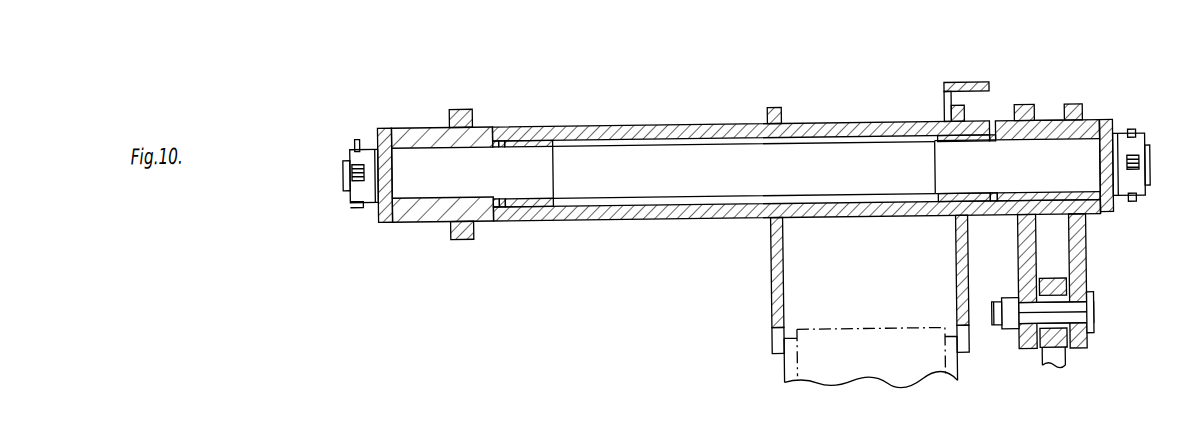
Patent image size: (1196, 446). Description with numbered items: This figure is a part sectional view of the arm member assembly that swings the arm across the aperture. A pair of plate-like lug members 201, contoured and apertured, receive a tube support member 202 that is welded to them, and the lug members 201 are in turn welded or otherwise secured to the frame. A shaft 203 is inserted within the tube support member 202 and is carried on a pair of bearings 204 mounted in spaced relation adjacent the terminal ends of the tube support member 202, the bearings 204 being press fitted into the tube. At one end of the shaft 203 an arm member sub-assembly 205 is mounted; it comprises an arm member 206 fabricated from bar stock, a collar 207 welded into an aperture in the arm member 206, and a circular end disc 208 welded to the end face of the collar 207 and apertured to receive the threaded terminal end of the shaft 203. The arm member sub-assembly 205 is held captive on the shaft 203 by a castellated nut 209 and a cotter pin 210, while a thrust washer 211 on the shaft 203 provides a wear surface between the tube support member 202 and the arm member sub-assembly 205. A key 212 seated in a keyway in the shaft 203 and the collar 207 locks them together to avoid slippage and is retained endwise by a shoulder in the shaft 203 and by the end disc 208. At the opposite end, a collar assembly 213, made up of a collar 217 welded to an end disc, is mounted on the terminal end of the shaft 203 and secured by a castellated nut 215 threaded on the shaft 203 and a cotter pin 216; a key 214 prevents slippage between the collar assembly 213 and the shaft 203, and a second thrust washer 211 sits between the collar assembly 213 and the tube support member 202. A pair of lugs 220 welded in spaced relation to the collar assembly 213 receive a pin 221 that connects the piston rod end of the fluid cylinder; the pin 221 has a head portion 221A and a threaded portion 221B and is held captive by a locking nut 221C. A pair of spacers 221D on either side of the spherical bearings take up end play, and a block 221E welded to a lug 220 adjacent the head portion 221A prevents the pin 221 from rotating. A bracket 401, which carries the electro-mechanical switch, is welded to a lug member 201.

The lug members 201 is at (773, 243).
The tube support member 202 is at (830, 127).
The shaft 203 is at (700, 160).
The bearings 204 is at (551, 135).
The arm member sub-assembly 205 is at (430, 123).
The arm member 206 is at (496, 125).
The collar 207 is at (463, 107).
The circular end disc 208 is at (391, 123).
The castellated nut 209 is at (372, 138).
The cotter pin 210 is at (357, 137).
The thrust washer 211 is at (504, 136).
The key 212 is at (453, 207).
The collar assembly 213 is at (1050, 137).
The key 214 is at (1087, 203).
The castellated nut 215 is at (1128, 134).
The cotter pin 216 is at (1133, 207).
The collar 217 is at (1047, 121).
The lugs 220 is at (1023, 108).
The pin 221 is at (1090, 322).
The head portion 221A is at (1093, 305).
The threaded portion 221B is at (998, 312).
The locking nut 221C is at (1010, 300).
The spacers 221D is at (1027, 353).
The block 221E is at (1090, 296).
The bracket 401 is at (963, 85).